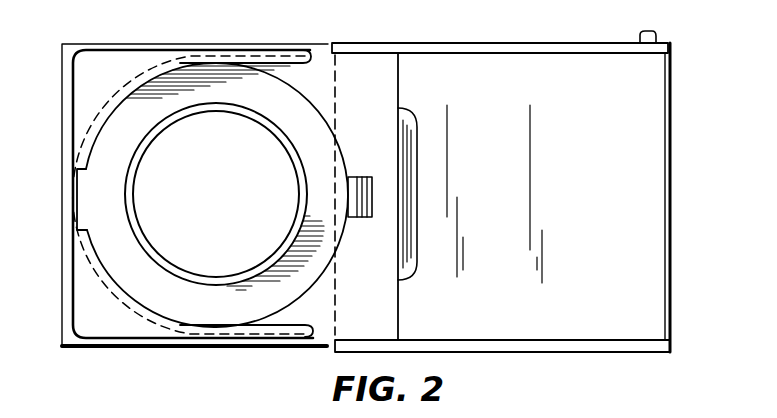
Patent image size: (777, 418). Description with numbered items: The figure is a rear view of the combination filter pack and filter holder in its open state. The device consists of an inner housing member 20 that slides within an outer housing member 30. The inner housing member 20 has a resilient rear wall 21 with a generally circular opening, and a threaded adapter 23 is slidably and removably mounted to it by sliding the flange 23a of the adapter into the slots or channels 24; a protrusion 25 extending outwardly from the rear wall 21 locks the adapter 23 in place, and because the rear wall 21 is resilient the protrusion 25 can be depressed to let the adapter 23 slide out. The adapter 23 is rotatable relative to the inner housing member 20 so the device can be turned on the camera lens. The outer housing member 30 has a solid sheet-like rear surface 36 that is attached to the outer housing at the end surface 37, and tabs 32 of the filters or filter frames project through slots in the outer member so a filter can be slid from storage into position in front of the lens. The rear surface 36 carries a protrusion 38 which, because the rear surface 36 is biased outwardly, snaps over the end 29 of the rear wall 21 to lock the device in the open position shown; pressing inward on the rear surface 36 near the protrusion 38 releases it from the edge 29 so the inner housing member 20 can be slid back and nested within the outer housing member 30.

The inner housing member 20 is at (96, 42).
The rear wall 21 is at (323, 60).
The threaded adapter 23 is at (112, 147).
The flange 23a is at (99, 157).
The slots or channels 24 is at (286, 56).
The protrusion 25 is at (364, 176).
The end of the rear surface 29 is at (399, 97).
The outer housing member 30 is at (461, 42).
The tabs 32 is at (652, 37).
The rear surface 36 is at (578, 127).
The end surface 37 is at (673, 90).
The protrusion 38 is at (412, 184).